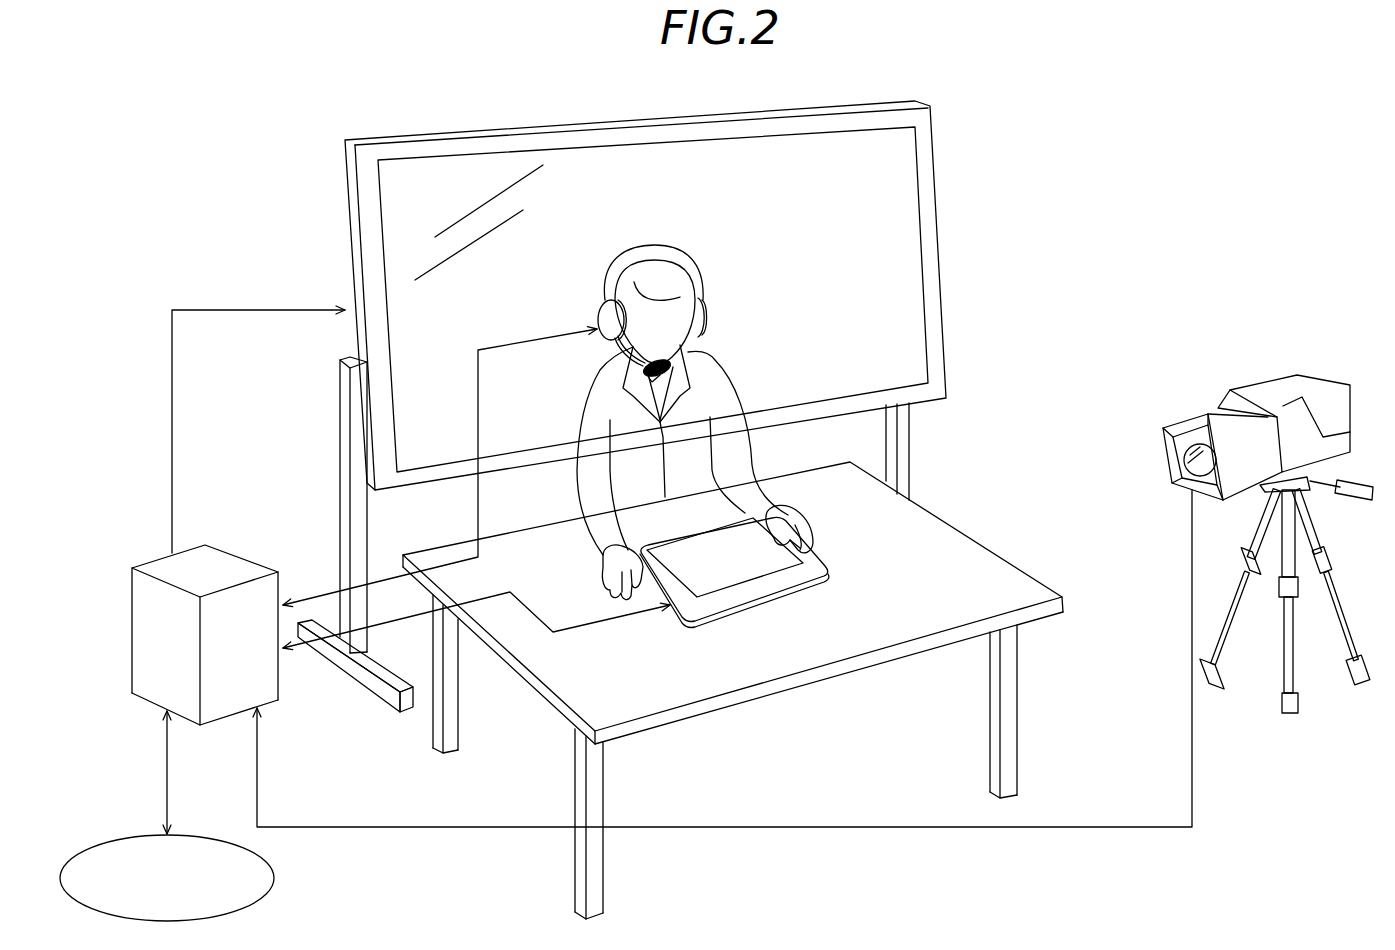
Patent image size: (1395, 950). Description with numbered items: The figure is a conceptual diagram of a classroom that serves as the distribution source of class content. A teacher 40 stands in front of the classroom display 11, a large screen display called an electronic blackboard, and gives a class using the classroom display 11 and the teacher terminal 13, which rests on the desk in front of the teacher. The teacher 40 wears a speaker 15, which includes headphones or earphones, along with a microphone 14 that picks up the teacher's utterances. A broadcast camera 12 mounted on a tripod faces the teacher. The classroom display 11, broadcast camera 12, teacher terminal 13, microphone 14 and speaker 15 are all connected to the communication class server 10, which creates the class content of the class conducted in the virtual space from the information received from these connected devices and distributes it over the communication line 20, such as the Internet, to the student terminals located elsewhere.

The communication class server 10 is at (225, 546).
The classroom display 11 is at (380, 138).
The broadcast camera 12 is at (1258, 383).
The teacher terminal 13 is at (818, 558).
The microphone 14 is at (636, 375).
The speaker 15 is at (612, 306).
The communication line 20 is at (273, 877).
The teacher 40 is at (712, 360).